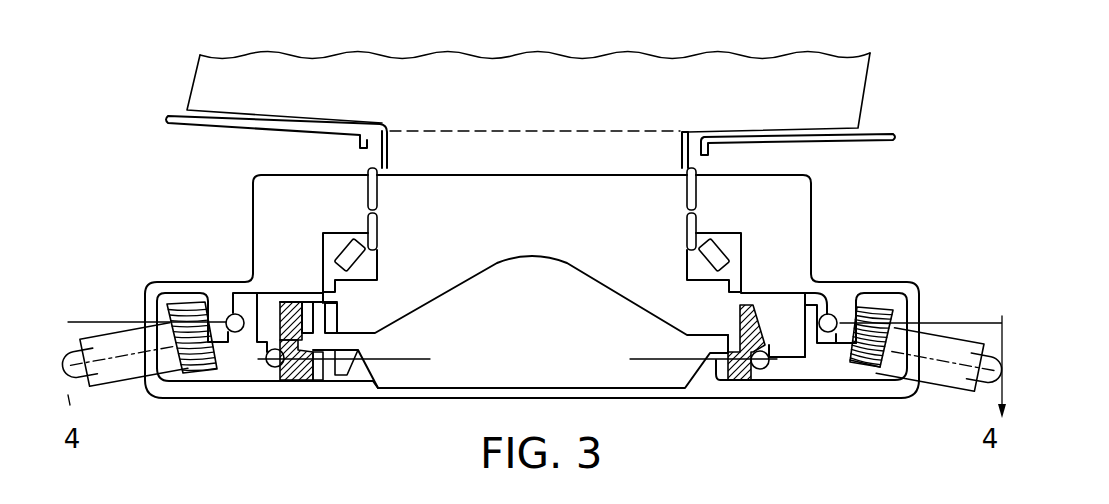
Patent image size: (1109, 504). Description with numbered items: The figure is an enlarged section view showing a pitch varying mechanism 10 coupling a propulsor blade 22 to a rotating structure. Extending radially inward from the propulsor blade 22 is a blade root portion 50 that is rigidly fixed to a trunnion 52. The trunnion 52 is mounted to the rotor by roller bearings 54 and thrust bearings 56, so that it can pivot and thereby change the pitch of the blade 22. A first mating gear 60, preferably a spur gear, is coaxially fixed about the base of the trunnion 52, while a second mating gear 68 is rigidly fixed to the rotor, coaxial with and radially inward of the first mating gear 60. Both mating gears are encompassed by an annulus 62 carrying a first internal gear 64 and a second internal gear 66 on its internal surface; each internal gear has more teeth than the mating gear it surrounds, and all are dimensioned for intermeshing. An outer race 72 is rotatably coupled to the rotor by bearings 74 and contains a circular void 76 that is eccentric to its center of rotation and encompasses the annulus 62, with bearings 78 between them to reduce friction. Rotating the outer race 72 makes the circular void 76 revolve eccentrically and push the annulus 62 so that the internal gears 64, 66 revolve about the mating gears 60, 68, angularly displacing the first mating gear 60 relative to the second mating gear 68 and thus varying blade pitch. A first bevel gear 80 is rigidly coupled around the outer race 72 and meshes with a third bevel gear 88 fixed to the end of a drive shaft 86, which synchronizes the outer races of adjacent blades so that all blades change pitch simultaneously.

The pitch varying mechanism 10 is at (205, 219).
The propulsor blade 22 is at (353, 77).
The blade root portion 50 is at (406, 152).
The trunnion 52 is at (498, 239).
The roller bearings 54 is at (378, 192).
The thrust bearings 56 is at (352, 258).
The first mating gear 60 is at (332, 315).
The annulus 62 is at (297, 372).
The first internal gear 64 is at (308, 305).
The second internal gear 66 is at (320, 367).
The second mating gear 68 is at (343, 372).
The outer race 72 is at (800, 350).
The bearings 74 is at (226, 318).
The circular void 76 is at (273, 338).
The bearings 78 is at (277, 370).
The first bevel gear 80 is at (855, 363).
The drive shaft 86 is at (125, 355).
The third bevel gear 88 is at (188, 310).